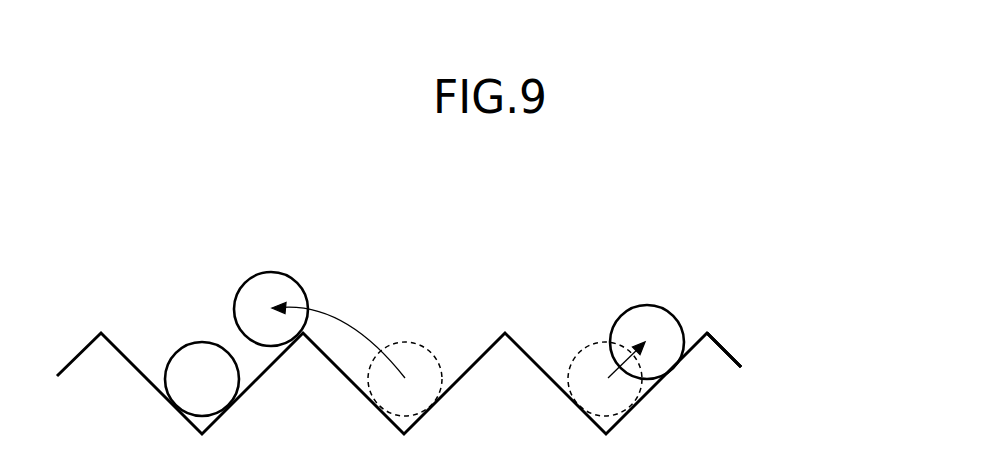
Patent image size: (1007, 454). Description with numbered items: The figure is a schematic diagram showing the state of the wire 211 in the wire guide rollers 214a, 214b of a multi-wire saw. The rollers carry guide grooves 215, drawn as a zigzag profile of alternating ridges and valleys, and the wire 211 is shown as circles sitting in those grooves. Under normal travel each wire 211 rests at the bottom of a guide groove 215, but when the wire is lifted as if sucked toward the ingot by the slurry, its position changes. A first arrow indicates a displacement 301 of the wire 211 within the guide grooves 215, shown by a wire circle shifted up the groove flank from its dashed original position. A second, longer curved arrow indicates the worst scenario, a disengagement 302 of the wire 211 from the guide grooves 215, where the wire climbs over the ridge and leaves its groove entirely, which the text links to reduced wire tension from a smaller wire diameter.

The wire 211 is at (400, 342).
The guide grooves 215 is at (530, 353).
The wire guide roller 214a is at (718, 358).
The wire guide roller 214b is at (724, 350).
The displacement 301 is at (627, 358).
The disengagement 302 is at (345, 325).